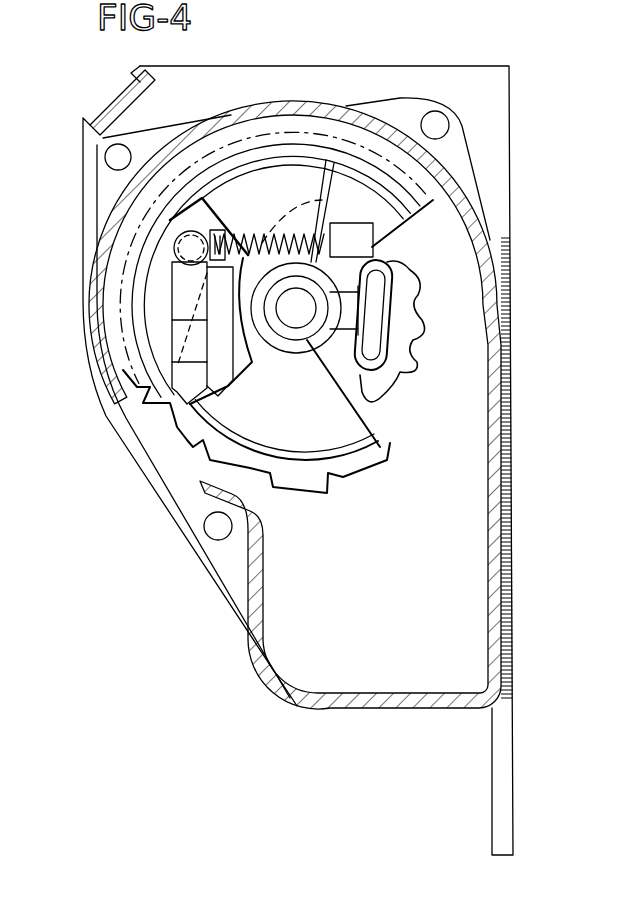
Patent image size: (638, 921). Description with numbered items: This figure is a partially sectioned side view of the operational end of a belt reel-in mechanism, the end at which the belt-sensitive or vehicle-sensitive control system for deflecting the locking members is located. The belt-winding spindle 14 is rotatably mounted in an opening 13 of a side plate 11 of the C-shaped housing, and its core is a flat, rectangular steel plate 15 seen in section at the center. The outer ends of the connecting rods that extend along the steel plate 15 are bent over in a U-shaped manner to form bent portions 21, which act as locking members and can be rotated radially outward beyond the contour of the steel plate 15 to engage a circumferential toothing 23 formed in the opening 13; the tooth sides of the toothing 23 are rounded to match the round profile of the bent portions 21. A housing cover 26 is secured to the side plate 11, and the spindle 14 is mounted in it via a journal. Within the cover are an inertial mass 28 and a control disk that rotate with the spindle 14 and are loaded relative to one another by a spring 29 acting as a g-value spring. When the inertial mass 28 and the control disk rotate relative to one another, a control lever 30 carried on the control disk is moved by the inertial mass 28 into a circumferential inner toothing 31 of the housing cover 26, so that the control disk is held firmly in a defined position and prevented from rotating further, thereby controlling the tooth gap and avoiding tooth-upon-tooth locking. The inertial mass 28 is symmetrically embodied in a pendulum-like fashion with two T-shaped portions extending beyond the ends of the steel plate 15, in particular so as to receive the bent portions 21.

The side plate 11 is at (470, 251).
The opening 13 is at (408, 236).
The belt-winding spindle 14 is at (363, 387).
The steel plate 15 is at (402, 307).
The bent portion 21 is at (383, 337).
The circumferential toothing 23 is at (410, 318).
The housing cover 26 is at (102, 270).
The inertial mass 28 is at (262, 182).
The spring 29 is at (313, 205).
The control lever 30 is at (175, 339).
The inner toothing 31 is at (174, 423).